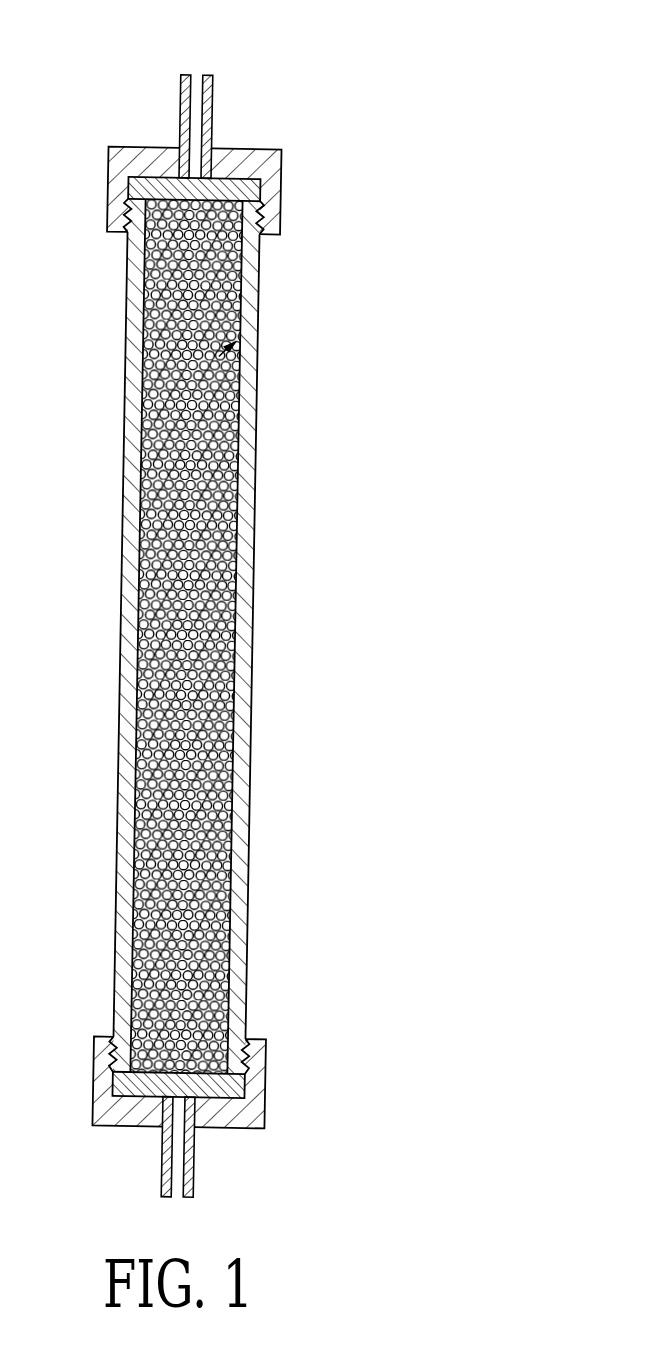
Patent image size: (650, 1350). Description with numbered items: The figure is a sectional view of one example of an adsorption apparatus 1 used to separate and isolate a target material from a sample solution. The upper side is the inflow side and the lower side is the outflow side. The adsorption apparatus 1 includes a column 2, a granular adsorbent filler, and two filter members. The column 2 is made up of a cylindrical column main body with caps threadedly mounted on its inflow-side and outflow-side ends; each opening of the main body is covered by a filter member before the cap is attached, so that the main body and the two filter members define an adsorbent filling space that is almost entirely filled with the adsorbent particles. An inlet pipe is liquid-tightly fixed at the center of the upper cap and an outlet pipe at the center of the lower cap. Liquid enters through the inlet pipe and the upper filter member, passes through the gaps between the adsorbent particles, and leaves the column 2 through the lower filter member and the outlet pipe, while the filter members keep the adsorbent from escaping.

The adsorption apparatus 1 is at (382, 98).
The column 2 is at (186, 636).